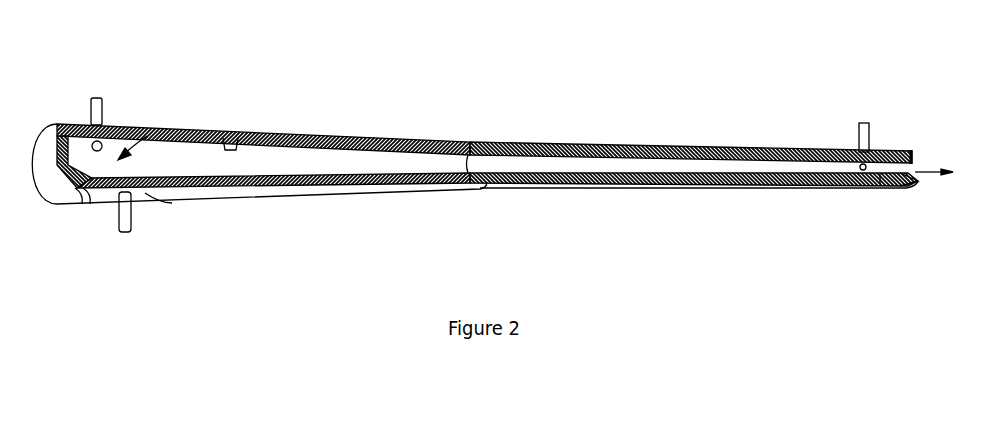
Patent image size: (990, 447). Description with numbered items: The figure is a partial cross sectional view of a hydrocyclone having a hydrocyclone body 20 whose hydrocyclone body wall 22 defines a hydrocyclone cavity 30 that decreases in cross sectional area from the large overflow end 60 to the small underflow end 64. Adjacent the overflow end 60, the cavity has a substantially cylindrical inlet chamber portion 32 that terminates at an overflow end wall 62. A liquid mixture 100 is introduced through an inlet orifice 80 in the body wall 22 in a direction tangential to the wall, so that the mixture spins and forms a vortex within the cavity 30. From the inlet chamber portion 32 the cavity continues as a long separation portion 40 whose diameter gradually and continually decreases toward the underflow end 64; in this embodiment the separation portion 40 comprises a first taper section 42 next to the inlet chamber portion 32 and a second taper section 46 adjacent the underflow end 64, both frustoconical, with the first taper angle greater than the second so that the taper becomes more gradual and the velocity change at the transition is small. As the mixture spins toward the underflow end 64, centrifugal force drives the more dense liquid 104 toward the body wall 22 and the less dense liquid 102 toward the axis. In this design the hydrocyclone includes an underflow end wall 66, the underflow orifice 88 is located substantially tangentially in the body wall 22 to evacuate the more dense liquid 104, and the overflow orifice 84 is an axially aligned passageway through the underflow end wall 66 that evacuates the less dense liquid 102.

The hydrocyclone body 20 is at (145, 197).
The hydrocyclone body wall 22 is at (240, 147).
The hydrocyclone cavity 30 is at (300, 158).
The inlet chamber portion 32 is at (147, 136).
The separation portion 40 is at (473, 127).
The first taper section 42 is at (340, 158).
The second taper section 46 is at (593, 166).
The overflow end 60 is at (53, 192).
The overflow end wall 62 is at (73, 140).
The underflow end 64 is at (913, 157).
The underflow end wall 66 is at (882, 182).
The inlet orifice 80 is at (108, 141).
The overflow orifice 84 is at (893, 185).
The underflow orifice 88 is at (859, 162).
The liquid mixture 100 is at (96, 95).
The less dense liquid 102 is at (932, 175).
The more dense liquid 104 is at (863, 73).